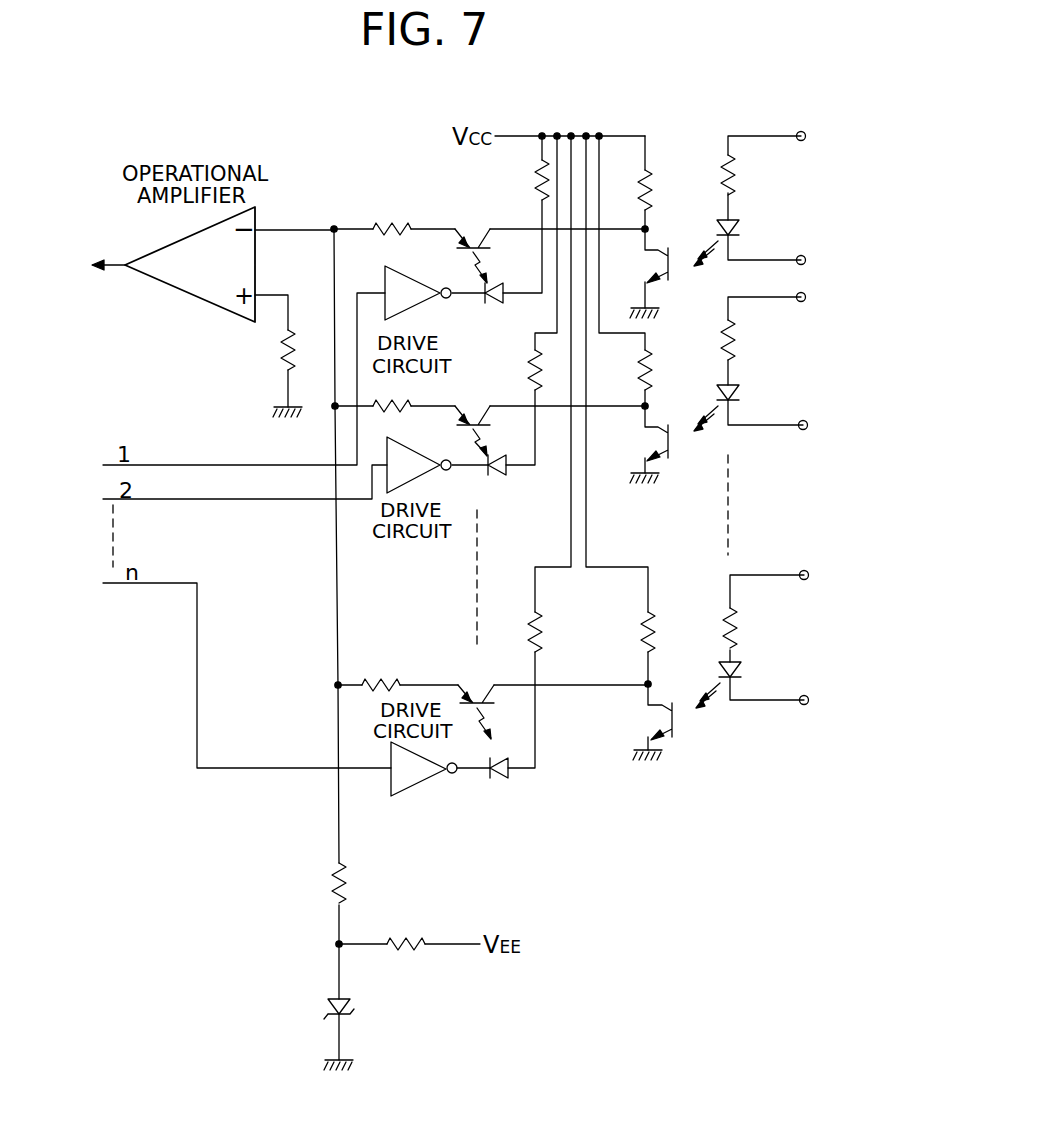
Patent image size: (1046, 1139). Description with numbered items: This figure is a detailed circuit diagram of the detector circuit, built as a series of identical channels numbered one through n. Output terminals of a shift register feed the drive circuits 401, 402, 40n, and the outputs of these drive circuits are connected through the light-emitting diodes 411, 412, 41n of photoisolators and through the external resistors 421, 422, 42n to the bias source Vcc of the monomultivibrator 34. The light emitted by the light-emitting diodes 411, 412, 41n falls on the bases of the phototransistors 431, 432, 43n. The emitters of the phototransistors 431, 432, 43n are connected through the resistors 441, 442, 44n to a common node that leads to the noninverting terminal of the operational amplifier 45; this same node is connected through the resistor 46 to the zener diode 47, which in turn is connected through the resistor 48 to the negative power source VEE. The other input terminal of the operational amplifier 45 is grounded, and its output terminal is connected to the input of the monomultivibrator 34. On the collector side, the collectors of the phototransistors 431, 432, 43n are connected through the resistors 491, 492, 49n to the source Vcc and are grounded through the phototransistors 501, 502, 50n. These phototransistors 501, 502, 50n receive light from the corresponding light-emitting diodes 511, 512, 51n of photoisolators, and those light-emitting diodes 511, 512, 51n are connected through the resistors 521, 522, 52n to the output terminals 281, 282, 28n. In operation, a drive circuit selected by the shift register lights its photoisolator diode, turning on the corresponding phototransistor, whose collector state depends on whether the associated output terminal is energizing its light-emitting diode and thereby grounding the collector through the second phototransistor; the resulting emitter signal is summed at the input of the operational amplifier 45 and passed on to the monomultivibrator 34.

The monomultivibrator 34 is at (88, 268).
The operational amplifier 45 is at (180, 293).
The resistor 441 is at (391, 225).
The resistor 442 is at (396, 404).
The resistor 44n is at (376, 680).
The phototransistor 431 is at (473, 246).
The phototransistor 432 is at (462, 418).
The phototransistor 43n is at (482, 700).
The drive circuit 401 is at (424, 284).
The drive circuit 402 is at (417, 480).
The drive circuit 40n is at (418, 785).
The light-emitting diode 411 is at (490, 305).
The light-emitting diode 412 is at (493, 478).
The light-emitting diode 41n is at (495, 779).
The external resistor 421 is at (538, 180).
The external resistor 422 is at (532, 382).
The external resistor 42n is at (542, 628).
The resistor 491 is at (652, 182).
The resistor 492 is at (652, 360).
The resistor 49n is at (644, 636).
The phototransistor 501 is at (656, 250).
The phototransistor 502 is at (655, 440).
The phototransistor 50n is at (664, 714).
The resistor 521 is at (738, 175).
The resistor 522 is at (734, 341).
The resistor 52n is at (737, 622).
The light-emitting diode 511 is at (740, 231).
The light-emitting diode 512 is at (740, 392).
The light-emitting diode 51n is at (742, 674).
The output terminal 281 is at (801, 131).
The output terminal 282 is at (806, 297).
The output terminal 28n is at (804, 570).
The resistor 46 is at (331, 889).
The zener diode 47 is at (354, 1004).
The resistor 48 is at (405, 936).